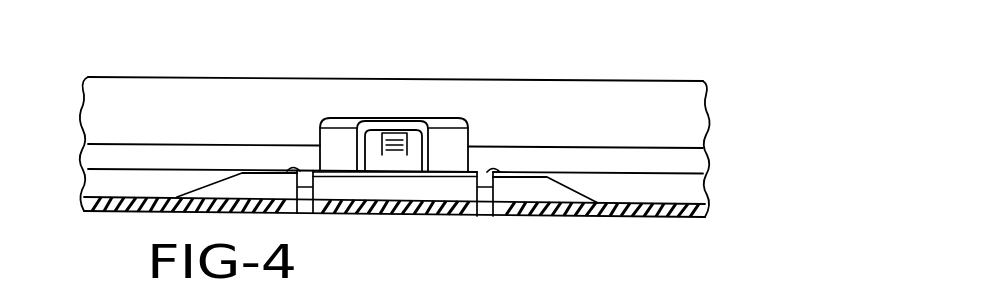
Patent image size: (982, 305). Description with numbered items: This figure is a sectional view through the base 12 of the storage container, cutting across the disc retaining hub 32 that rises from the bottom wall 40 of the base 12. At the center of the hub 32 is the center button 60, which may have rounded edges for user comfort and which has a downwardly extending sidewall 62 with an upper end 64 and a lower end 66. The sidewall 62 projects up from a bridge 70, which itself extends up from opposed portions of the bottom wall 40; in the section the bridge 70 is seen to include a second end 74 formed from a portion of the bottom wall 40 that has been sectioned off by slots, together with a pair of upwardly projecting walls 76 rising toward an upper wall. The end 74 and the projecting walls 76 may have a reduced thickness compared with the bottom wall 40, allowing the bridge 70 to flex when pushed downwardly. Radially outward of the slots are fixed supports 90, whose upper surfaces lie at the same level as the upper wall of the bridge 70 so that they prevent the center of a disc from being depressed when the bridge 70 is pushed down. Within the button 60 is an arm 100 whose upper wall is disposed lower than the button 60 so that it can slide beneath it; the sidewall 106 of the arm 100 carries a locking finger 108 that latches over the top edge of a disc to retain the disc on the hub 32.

The base 12 is at (160, 76).
The retaining hub 32 is at (432, 94).
The bottom wall 40 is at (653, 213).
The center button 60 is at (345, 117).
The sidewall 62 is at (453, 155).
The upper end 64 is at (462, 122).
The lower end 66 is at (318, 166).
The bridge 70 is at (261, 169).
The second end 74 is at (442, 212).
The upwardly projecting walls 76 is at (382, 192).
The fixed supports 90 is at (213, 183).
The arm 100 is at (378, 131).
The sidewall 106 is at (413, 163).
The locking finger 108 is at (392, 143).